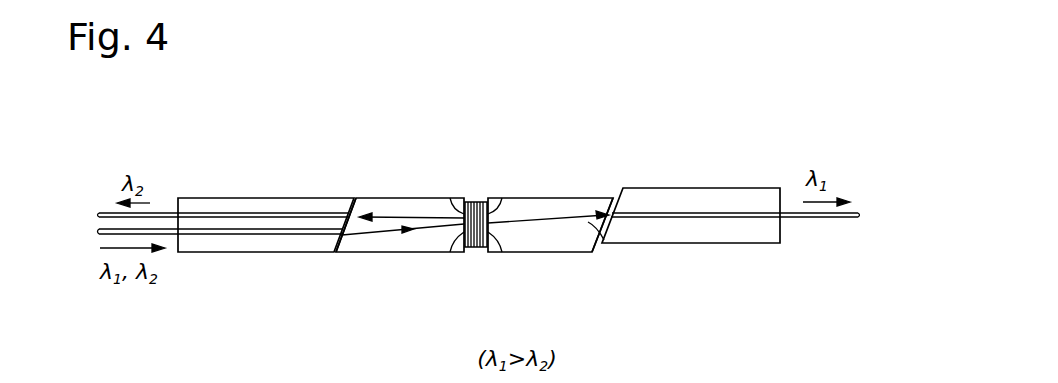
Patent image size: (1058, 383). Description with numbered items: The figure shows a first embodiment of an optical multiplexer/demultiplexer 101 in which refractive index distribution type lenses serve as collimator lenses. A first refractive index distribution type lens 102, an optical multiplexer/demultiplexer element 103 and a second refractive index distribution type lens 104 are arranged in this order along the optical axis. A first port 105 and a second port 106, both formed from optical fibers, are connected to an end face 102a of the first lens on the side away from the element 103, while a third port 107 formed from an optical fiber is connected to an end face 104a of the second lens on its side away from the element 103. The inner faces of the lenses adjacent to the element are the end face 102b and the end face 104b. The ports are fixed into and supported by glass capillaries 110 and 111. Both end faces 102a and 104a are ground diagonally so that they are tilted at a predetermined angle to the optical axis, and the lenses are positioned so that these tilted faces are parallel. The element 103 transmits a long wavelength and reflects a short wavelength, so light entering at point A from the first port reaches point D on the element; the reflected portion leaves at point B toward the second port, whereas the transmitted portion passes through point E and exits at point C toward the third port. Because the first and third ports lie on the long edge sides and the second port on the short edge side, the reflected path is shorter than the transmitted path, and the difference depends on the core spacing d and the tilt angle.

The optical multiplexer/demultiplexer 101 is at (541, 142).
The first refractive index distribution type lens 102 is at (400, 252).
The end face of the first refractive index distribution type lens 102a is at (340, 240).
The end face of first glass block facing filter 102b is at (452, 198).
The optical multiplexer/demultiplexer element 103 is at (474, 247).
The second refractive index distribution type lens 104 is at (540, 252).
The end face of the second refractive index distribution type lens 104a is at (586, 250).
The end face of second glass block facing filter 104b is at (500, 198).
The first port 105 is at (280, 234).
The second port 106 is at (273, 213).
The third port 107 is at (725, 213).
The glass capillary 110 is at (233, 252).
The glass capillary 111 is at (717, 235).
The point A is at (342, 236).
The point B is at (355, 214).
The point C is at (602, 206).
The point D is at (456, 252).
The point E is at (497, 252).
The distance between the cores d is at (83, 197).